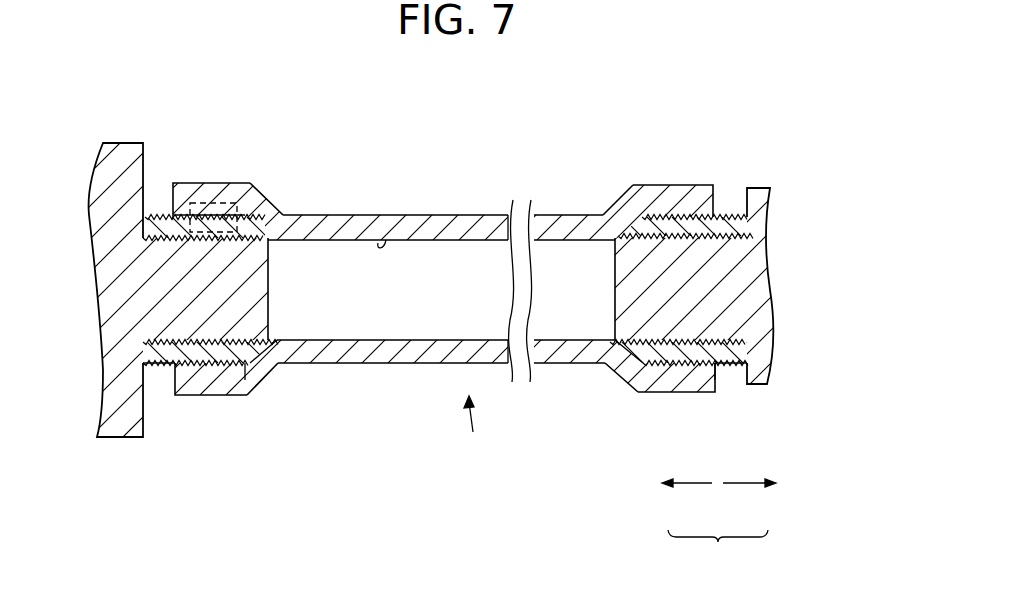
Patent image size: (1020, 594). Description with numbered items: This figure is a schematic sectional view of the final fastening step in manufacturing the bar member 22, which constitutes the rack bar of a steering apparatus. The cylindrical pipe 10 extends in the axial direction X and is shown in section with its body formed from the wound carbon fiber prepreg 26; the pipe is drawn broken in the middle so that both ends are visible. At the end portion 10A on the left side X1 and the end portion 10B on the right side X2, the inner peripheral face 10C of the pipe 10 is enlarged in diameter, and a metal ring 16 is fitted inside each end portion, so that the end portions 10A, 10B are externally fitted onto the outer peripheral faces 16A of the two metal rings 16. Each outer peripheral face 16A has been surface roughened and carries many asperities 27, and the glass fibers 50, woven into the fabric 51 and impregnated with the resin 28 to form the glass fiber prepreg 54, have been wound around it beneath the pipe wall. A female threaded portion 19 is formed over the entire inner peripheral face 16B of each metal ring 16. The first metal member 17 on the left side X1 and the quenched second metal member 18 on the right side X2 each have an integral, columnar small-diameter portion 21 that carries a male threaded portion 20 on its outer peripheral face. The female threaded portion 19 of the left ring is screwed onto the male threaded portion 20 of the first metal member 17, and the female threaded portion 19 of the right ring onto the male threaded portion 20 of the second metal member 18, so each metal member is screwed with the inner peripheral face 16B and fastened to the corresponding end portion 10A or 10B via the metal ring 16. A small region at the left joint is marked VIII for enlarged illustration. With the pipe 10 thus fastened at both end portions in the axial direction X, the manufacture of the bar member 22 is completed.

The pipe 10 is at (437, 222).
The end portion 10A is at (200, 205).
The end portion 10B is at (699, 194).
The inner peripheral face 10C is at (386, 240).
The metal ring 16 is at (140, 222).
The outer peripheral face 16A is at (157, 216).
The inner peripheral face 16B is at (178, 243).
The first metal member 17 is at (122, 428).
The second metal member 18 is at (758, 386).
The female threaded portion 19 is at (200, 338).
The male threaded portion 20 is at (220, 364).
The small-diameter portion 21 is at (258, 291).
The bar member 22 is at (475, 430).
The carbon fiber prepreg 26 is at (485, 222).
The asperities 27 is at (168, 366).
The resin 28 is at (220, 212).
The glass fibers 50 is at (446, 351).
The fabric 51 is at (242, 380).
The glass fiber prepreg 54 is at (197, 366).
The detail region of FIG. 8 VIII is at (238, 200).
The axial direction X is at (718, 549).
The left side X1 is at (695, 484).
The right side X2 is at (745, 484).